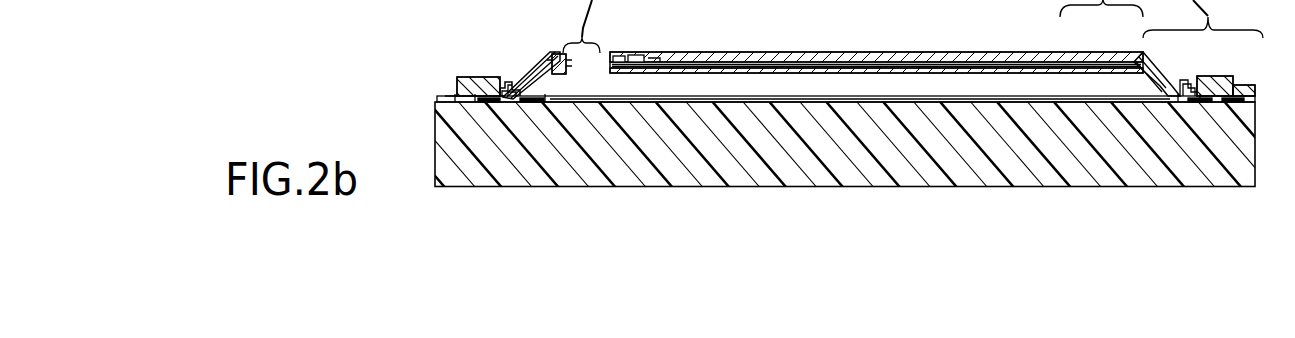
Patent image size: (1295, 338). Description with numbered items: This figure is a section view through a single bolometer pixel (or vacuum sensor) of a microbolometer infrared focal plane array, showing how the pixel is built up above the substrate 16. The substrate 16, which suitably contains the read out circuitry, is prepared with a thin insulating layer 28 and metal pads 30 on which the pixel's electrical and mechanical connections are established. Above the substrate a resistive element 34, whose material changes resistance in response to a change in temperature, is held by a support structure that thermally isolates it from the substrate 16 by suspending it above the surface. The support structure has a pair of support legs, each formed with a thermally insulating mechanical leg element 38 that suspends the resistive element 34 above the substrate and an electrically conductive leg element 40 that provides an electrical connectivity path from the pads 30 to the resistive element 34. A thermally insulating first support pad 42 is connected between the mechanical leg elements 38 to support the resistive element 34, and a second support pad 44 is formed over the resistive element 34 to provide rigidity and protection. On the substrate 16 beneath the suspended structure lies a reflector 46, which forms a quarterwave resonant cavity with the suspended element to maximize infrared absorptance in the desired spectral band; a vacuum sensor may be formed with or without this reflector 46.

The substrate 16 is at (862, 179).
The thin insulating layer 28 is at (440, 100).
The metal pads 30 is at (503, 97).
The resistive element 34 is at (810, 67).
The mechanical leg element 38 is at (1145, 76).
The electrically conductive leg element 40 is at (542, 65).
The first support pad 42 is at (930, 72).
The second support pad 44 is at (870, 53).
The reflector 46 is at (707, 103).